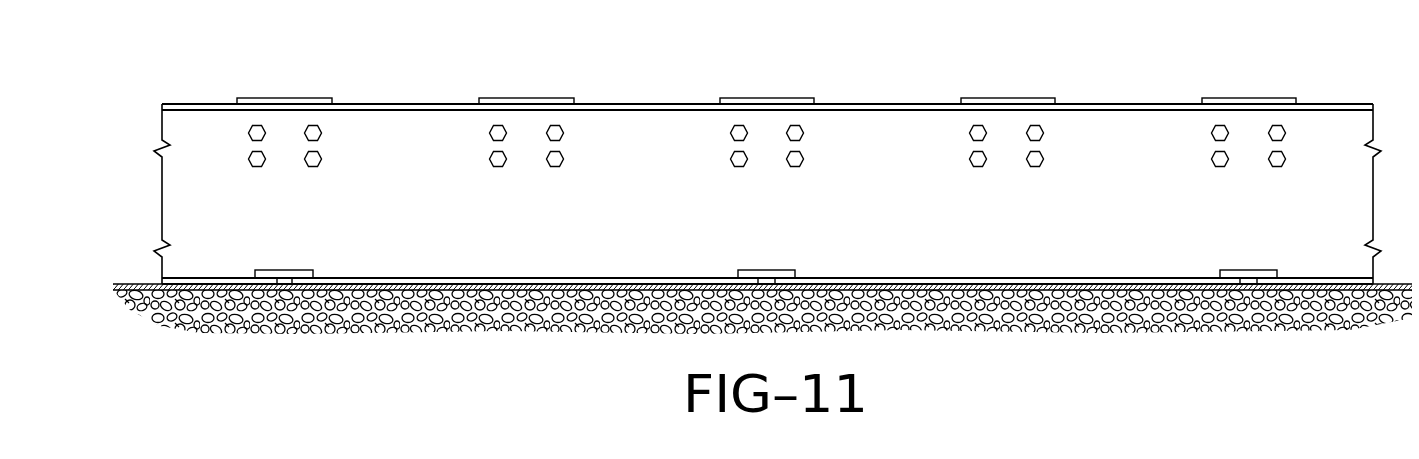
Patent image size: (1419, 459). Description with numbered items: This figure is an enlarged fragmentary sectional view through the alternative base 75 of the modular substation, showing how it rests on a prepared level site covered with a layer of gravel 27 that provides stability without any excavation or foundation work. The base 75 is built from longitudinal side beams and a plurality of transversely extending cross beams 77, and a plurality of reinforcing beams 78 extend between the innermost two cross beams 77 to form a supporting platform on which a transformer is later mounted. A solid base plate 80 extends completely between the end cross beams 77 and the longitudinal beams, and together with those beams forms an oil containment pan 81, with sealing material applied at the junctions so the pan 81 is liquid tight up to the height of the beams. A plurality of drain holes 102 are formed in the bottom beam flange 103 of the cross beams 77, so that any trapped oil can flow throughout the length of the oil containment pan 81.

The layer of gravel 27 is at (268, 323).
The base 75 is at (224, 71).
The cross beams 77 is at (637, 104).
The reinforcing beams 78 is at (298, 98).
The base plate 80 is at (1052, 278).
The oil containment pan 81 is at (1139, 140).
The drain holes 102 is at (283, 270).
The bottom beam flange 103 is at (537, 278).